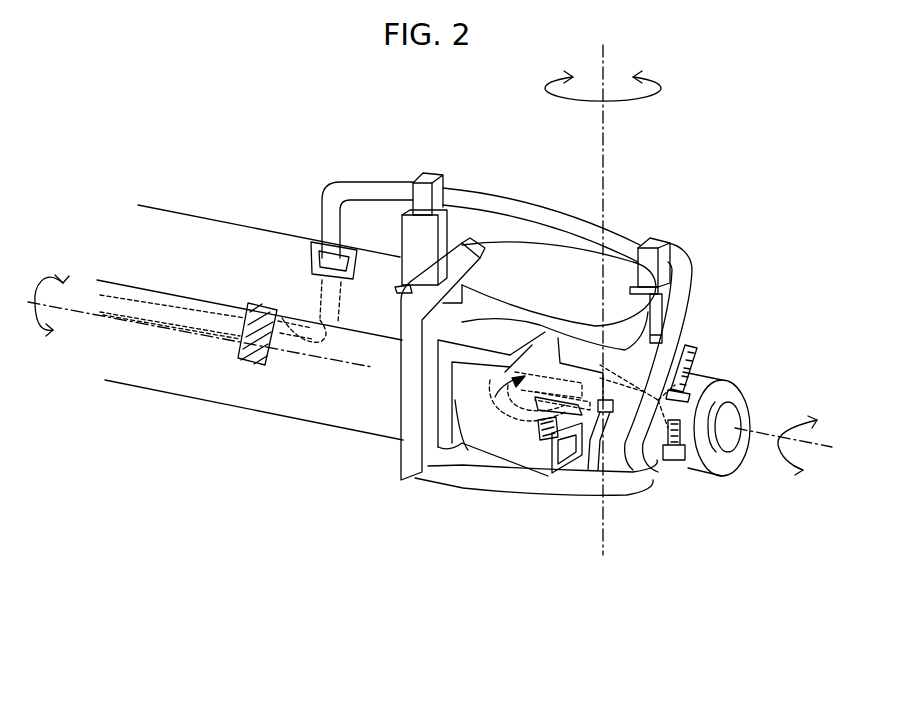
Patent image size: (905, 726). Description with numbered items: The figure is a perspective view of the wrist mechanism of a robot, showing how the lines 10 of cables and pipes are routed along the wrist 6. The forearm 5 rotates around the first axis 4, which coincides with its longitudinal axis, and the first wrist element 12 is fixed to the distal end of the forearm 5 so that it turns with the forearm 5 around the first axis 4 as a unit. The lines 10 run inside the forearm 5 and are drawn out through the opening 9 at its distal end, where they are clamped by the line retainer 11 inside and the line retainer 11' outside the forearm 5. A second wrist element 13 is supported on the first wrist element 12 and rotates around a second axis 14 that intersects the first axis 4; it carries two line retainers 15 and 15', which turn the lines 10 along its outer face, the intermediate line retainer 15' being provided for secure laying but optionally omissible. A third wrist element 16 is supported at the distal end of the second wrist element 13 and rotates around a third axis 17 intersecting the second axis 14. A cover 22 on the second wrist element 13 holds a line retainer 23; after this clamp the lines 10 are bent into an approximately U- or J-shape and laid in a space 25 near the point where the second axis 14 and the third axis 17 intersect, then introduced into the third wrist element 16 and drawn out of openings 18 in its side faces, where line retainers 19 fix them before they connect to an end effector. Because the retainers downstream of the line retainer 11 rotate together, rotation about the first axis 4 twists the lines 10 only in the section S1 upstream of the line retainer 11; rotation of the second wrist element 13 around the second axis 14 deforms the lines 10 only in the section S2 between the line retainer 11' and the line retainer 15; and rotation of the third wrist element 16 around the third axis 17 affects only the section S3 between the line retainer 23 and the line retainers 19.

The first axis 4 is at (80, 311).
The forearm 5 is at (137, 382).
The wrist 6 is at (462, 505).
The opening 9 is at (313, 242).
The lines 10 is at (490, 187).
The line retainer 11 is at (254, 403).
The line retainer 11' is at (437, 207).
The first wrist element 12 is at (403, 430).
The second wrist element 13 is at (680, 347).
The second axis 14 is at (603, 137).
The line retainer 15 is at (663, 260).
The line retainer 15' is at (591, 501).
The third wrist element 16 is at (707, 377).
The third axis 17 is at (767, 427).
The openings 18 is at (670, 472).
The line retainers 19 is at (707, 477).
The cover 22 is at (457, 460).
The line retainer 23 is at (540, 465).
The space 25 is at (523, 400).
The section S1 is at (156, 300).
The section S2 is at (561, 207).
The section S3 is at (475, 500).